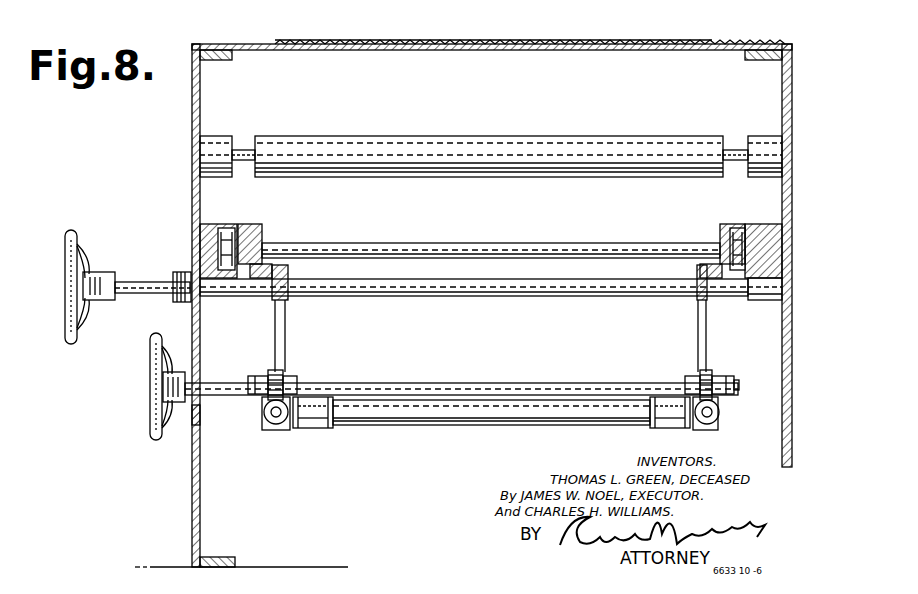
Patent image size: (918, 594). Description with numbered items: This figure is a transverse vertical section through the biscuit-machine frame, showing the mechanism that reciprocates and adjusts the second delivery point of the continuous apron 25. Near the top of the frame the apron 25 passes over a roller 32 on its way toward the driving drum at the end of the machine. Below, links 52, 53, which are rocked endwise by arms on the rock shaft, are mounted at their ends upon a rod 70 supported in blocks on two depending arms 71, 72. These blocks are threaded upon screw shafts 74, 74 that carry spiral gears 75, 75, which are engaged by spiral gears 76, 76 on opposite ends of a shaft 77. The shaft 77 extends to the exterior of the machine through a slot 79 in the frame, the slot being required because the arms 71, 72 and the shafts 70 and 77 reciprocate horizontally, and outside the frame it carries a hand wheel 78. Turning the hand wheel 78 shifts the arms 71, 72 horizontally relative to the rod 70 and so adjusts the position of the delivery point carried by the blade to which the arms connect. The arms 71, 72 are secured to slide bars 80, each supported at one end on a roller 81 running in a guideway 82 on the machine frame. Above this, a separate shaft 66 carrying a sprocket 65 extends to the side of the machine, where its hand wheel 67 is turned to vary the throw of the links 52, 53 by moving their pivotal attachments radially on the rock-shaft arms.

The apron 25 is at (500, 44).
The roller 32 is at (528, 137).
The link 52 is at (674, 426).
The link 53 is at (304, 428).
The sprocket 65 is at (291, 282).
The shaft 66 is at (484, 288).
The hand wheel 67 is at (68, 266).
The rod 70 is at (506, 422).
The depending arm 71 is at (698, 320).
The depending arm 72 is at (285, 330).
The screw shaft 74 is at (276, 416).
The spiral gear 75 is at (264, 412).
The spiral gear 76 is at (270, 376).
The shaft 77 is at (461, 383).
The hand wheel 78 is at (150, 396).
The slot 79 is at (192, 418).
The slide bar 80 is at (262, 230).
The roller 81 is at (230, 245).
The guideway 82 is at (228, 226).